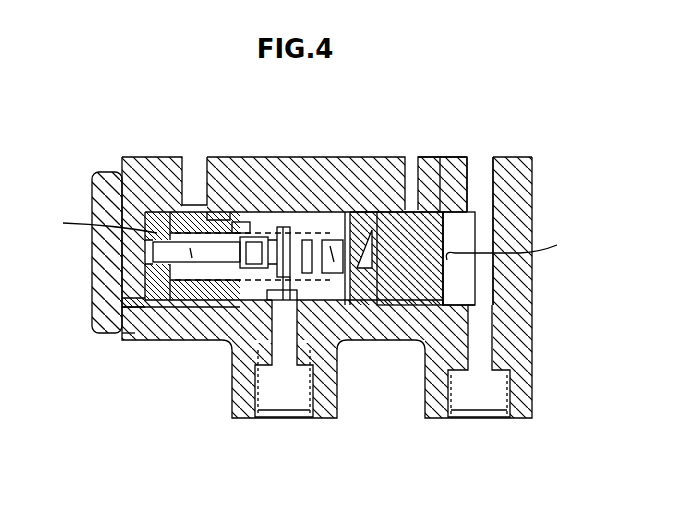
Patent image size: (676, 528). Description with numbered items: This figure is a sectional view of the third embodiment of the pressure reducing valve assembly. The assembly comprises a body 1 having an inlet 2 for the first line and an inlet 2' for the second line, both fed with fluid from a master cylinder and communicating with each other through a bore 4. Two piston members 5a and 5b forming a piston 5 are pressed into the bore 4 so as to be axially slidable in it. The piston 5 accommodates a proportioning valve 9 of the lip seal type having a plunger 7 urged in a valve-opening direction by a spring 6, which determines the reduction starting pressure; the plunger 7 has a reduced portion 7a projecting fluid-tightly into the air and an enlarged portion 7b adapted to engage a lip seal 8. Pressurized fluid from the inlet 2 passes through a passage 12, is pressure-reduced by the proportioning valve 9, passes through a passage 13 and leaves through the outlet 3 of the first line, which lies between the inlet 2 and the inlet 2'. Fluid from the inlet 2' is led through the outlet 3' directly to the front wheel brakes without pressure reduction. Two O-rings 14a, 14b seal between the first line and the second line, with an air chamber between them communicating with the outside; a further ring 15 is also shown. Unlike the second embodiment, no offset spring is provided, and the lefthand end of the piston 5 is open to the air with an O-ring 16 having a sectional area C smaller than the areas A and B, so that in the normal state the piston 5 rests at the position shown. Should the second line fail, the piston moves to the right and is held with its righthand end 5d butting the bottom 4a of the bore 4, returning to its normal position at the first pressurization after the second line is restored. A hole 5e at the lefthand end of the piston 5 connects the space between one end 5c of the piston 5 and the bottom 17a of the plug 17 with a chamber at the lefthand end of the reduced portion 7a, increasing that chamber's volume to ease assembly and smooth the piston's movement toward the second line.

The body 1 is at (515, 340).
The inlet 2 is at (164, 157).
The inlet 2' is at (512, 260).
The outlet 3 is at (284, 394).
The outlet 3' is at (467, 396).
The bore 4 is at (480, 178).
The bottom of the bore 4a is at (517, 249).
The piston 5 is at (338, 212).
The piston member 5a is at (400, 210).
The piston member 5b is at (165, 205).
The end of the piston 5c is at (155, 215).
The sectional area C is at (97, 226).
The righthand end of the piston 5d is at (443, 285).
The hole 5e is at (155, 253).
The spring 6 is at (207, 337).
The plunger 7 is at (283, 240).
The reduced portion 7a is at (168, 335).
The enlarged portion 7b is at (298, 300).
The lip seal 8 is at (312, 215).
The proportioning valve 9 is at (327, 405).
The passage 12 is at (223, 200).
The passage 13 is at (333, 272).
The O-ring 14a is at (457, 213).
The O-ring 14b is at (358, 207).
The ring 15 is at (247, 205).
The O-ring 16 is at (132, 337).
The plug 17 is at (92, 278).
The bottom of the plug 17a is at (125, 308).